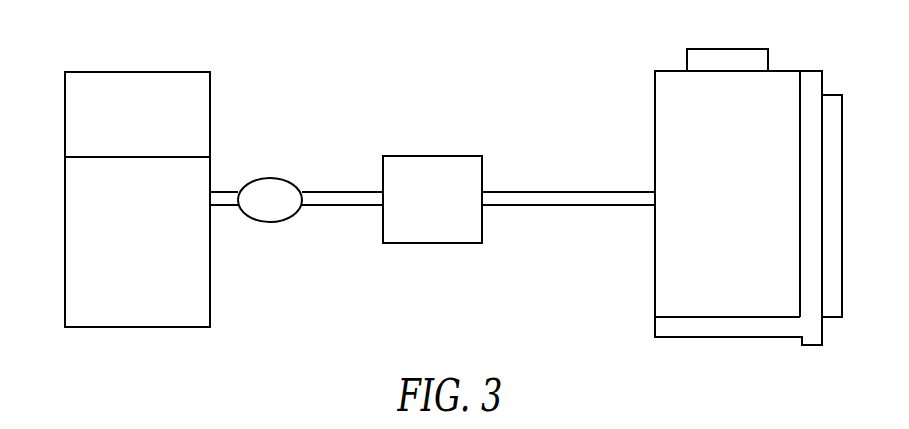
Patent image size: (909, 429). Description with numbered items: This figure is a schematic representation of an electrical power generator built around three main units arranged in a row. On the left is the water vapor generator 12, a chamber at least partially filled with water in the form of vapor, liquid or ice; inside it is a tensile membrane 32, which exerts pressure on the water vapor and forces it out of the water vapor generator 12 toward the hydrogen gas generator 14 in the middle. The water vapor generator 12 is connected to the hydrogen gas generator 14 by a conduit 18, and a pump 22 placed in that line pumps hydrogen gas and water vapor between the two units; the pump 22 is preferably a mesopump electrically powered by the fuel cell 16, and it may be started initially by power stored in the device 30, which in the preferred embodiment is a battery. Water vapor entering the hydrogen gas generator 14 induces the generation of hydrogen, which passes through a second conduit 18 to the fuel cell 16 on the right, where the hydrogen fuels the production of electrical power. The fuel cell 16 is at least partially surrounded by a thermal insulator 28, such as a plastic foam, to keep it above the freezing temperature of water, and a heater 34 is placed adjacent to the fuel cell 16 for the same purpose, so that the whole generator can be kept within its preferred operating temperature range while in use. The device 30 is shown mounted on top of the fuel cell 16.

The water vapor generator 12 is at (212, 251).
The hydrogen gas generator 14 is at (435, 156).
The fuel cell 16 is at (655, 252).
The conduit 18 is at (343, 192).
The pump 22 is at (270, 177).
The thermal insulator 28 is at (730, 337).
The device 30 is at (728, 49).
The tensile membrane 32 is at (90, 157).
The heater 34 is at (842, 206).